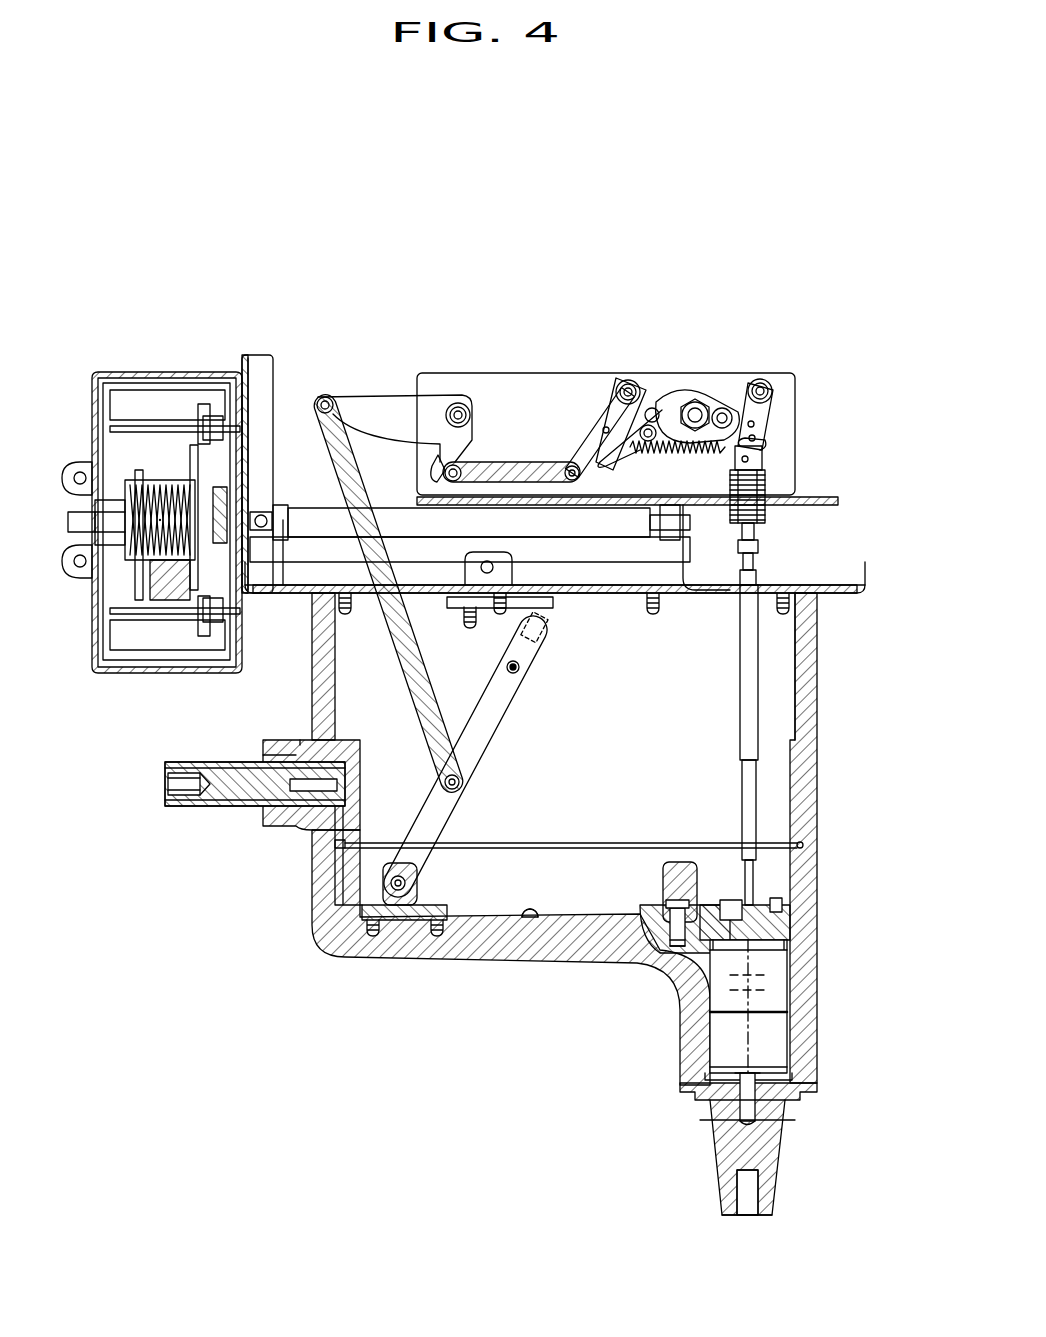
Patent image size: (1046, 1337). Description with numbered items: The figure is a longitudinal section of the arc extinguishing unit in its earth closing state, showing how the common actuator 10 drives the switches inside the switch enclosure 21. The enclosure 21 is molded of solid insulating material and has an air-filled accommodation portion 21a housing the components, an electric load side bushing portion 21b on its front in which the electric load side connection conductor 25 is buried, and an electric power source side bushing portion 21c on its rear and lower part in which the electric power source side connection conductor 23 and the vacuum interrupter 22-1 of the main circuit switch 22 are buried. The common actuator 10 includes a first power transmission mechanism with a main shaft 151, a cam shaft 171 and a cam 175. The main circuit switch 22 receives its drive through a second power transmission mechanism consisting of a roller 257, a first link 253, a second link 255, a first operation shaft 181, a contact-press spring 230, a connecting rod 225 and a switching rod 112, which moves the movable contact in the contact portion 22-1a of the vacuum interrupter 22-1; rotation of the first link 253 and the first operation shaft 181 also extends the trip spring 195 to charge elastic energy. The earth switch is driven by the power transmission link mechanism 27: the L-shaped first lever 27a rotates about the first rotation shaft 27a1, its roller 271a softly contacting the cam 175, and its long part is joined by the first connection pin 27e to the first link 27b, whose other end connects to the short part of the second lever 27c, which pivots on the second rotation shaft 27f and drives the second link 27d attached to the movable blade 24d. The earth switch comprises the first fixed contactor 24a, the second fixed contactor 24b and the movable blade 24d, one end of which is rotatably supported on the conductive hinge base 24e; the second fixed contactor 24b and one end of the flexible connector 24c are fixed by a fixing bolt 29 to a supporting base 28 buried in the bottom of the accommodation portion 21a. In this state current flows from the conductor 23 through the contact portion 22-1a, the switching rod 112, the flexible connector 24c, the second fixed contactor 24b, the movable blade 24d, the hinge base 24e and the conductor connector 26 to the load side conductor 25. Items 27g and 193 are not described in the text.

The common actuator 10 is at (159, 355).
The main shaft 151 is at (317, 515).
The power transmission link mechanism 27 is at (437, 368).
The first lever 27a is at (614, 392).
The first rotation shaft 27a1 is at (652, 408).
The first link 27b is at (517, 466).
The second lever 27c is at (390, 405).
The second link 27d is at (432, 700).
The first connection pin 27e is at (582, 466).
The second rotation shaft 27f is at (458, 402).
The pivot pin 27g is at (328, 398).
The roller 271a is at (645, 428).
The spring 193 is at (662, 440).
The cam 175 is at (697, 398).
The cam shaft 171 is at (698, 400).
The first link 253 is at (724, 408).
The first operation shaft 181 is at (762, 378).
The roller 257 is at (748, 428).
The second link 255 is at (740, 436).
The trip spring 195 is at (748, 472).
The contact-press spring 230 is at (762, 486).
The connecting rod 225 is at (760, 546).
The main circuit switch 22 is at (856, 663).
The switching rod 112 is at (752, 724).
The first fixed contactor 24a is at (520, 632).
The second fixed contactor 24b is at (700, 892).
The flexible connector 24c is at (683, 952).
The movable blade 24d is at (345, 835).
The conductive hinge base 24e is at (393, 925).
The switch enclosure 21 is at (478, 942).
The accommodation portion 21a is at (531, 922).
The electric load side bushing portion 21b is at (302, 745).
The electric power source side bushing portion 21c is at (778, 1172).
The electric load side connection conductor 25 is at (253, 798).
The conductor connector 26 is at (372, 887).
The supporting base 28 is at (630, 958).
The fixing bolt 29 is at (665, 965).
The vacuum interrupter 22-1 is at (802, 1032).
The contact portion 22-1a is at (776, 982).
The electric power source side connection conductor 23 is at (760, 1150).